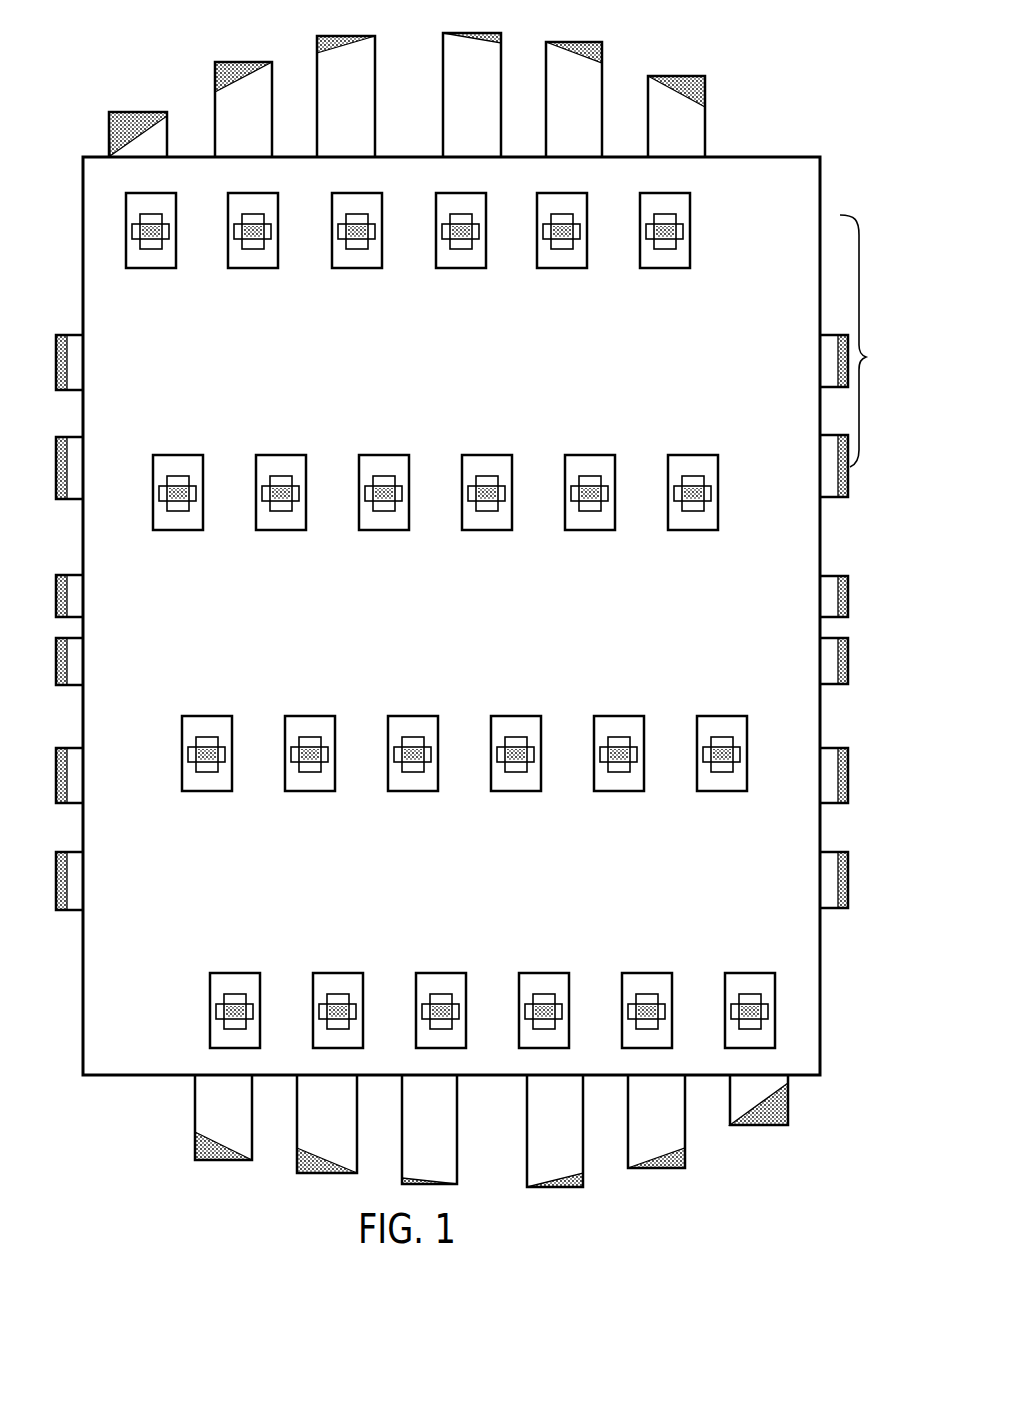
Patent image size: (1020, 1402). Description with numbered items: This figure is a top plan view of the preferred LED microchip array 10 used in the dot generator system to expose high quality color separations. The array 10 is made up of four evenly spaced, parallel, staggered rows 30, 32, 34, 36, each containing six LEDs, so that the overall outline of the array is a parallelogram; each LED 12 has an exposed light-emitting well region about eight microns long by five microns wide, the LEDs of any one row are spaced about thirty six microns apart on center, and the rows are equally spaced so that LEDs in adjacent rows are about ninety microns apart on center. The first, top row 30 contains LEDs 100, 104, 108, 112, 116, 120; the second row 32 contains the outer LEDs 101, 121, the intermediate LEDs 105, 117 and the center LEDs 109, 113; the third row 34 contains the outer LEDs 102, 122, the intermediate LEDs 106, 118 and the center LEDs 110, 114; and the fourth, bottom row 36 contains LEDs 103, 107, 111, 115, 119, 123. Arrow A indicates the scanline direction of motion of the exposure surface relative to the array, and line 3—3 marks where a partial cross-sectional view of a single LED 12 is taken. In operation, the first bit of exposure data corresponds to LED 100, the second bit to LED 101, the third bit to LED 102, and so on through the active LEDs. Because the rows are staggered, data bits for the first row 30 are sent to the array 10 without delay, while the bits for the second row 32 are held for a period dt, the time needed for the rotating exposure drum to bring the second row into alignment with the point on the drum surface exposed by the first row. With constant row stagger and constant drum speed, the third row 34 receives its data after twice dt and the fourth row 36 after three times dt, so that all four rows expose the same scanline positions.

The LED microchip array 10 is at (620, 58).
The LED 12 is at (705, 226).
The section line 3- 3 is at (667, 173).
The arrow A is at (777, 135).
The time delay dt is at (867, 341).
The first row 30 is at (430, 248).
The second row 32 is at (419, 514).
The third row 34 is at (440, 775).
The fourth row 36 is at (465, 1022).
The LED 100 is at (148, 248).
The LED 101 is at (175, 510).
The LED 102 is at (204, 771).
The LED 103 is at (232, 1028).
The LED 104 is at (250, 248).
The LED 105 is at (278, 510).
The LED 106 is at (307, 771).
The LED 107 is at (335, 1028).
The LED 108 is at (354, 248).
The LED 109 is at (381, 510).
The LED 110 is at (410, 771).
The LED 111 is at (438, 1028).
The LED 112 is at (458, 248).
The LED 113 is at (484, 510).
The LED 114 is at (513, 771).
The LED 115 is at (541, 1028).
The LED 116 is at (559, 248).
The LED 117 is at (587, 510).
The LED 118 is at (616, 771).
The LED 119 is at (644, 1028).
The LED 120 is at (680, 235).
The LED 121 is at (690, 510).
The LED 122 is at (719, 771).
The LED 123 is at (747, 1028).